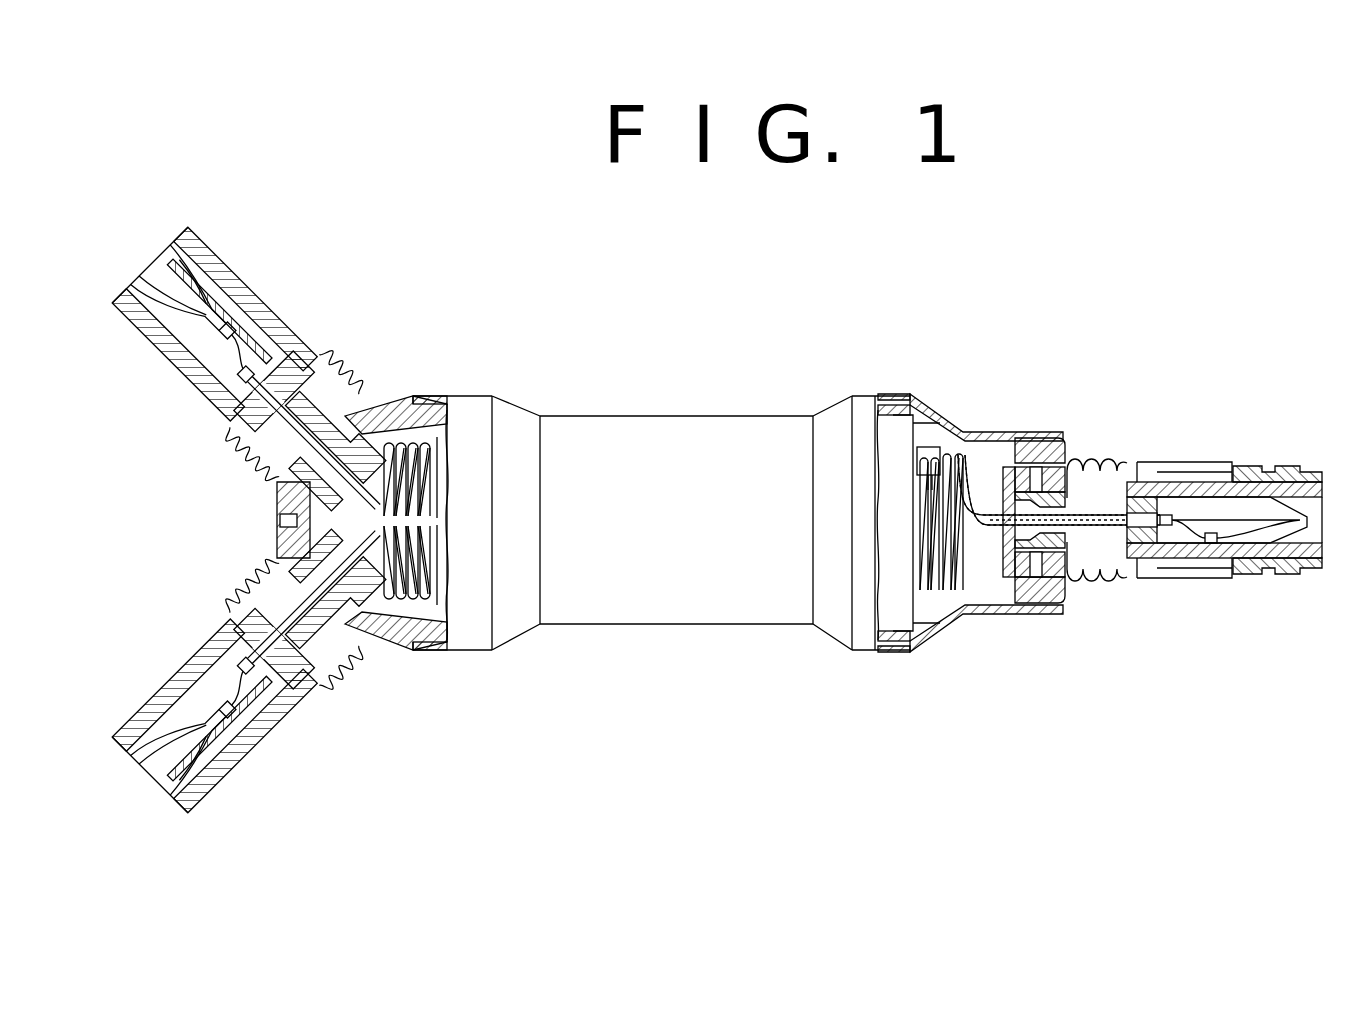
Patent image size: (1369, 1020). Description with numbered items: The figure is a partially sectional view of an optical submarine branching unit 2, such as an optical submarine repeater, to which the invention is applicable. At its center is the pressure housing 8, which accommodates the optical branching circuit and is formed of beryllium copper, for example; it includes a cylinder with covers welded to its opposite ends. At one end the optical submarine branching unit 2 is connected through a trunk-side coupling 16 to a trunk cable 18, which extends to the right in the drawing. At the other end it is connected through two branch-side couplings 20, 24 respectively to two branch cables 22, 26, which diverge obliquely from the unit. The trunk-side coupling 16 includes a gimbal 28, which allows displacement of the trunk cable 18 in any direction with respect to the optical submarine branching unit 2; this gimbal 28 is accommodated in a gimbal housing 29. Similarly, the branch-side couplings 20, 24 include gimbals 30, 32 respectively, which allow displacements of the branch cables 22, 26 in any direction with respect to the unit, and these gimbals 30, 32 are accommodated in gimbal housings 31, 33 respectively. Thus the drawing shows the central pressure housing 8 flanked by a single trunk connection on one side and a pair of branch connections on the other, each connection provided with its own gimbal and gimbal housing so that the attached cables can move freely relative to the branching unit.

The optical submarine branching unit 2 is at (728, 409).
The pressure housing 8 is at (620, 418).
The trunk-side coupling 16 is at (1123, 446).
The trunk cable 18 is at (1282, 562).
The branch-side coupling 20 is at (328, 346).
The branch cable 22 is at (232, 272).
The branch-side coupling 24 is at (346, 673).
The branch cable 26 is at (229, 762).
The gimbal 28 is at (1074, 491).
The gimbal housing 29 is at (1090, 592).
The gimbal 30 is at (341, 424).
The gimbal housing 31 is at (336, 378).
The gimbal 32 is at (296, 580).
The gimbal housing 33 is at (243, 590).